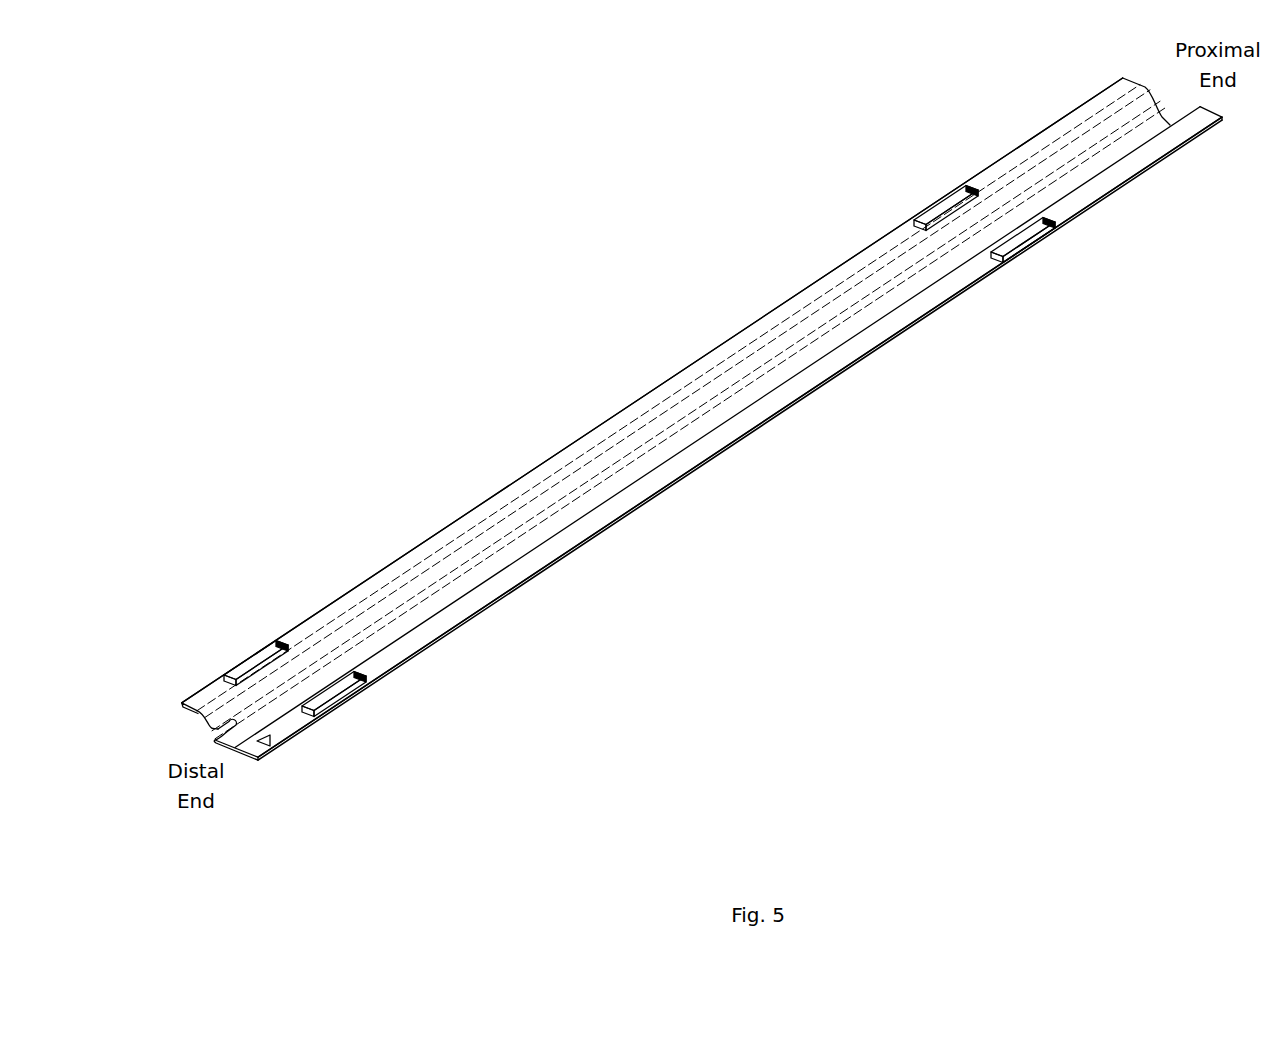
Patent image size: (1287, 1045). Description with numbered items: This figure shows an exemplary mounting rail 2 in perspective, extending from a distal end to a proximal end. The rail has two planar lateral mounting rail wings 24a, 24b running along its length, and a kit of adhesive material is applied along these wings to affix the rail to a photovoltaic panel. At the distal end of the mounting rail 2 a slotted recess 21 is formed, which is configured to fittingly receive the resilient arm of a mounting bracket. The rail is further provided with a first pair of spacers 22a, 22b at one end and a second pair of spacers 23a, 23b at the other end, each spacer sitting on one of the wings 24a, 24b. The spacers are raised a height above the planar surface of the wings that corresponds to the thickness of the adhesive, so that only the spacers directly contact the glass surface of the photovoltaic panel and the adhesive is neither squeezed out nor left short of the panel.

The mounting rail 2 is at (743, 437).
The slotted recess 21 is at (232, 719).
The first pair of spacers 22a is at (972, 188).
The first pair of spacers 22b is at (972, 188).
The second pair of spacers 23a is at (280, 645).
The second pair of spacers 23b is at (280, 645).
The lateral mounting rail wing 24a is at (485, 500).
The lateral mounting rail wing 24b is at (553, 553).